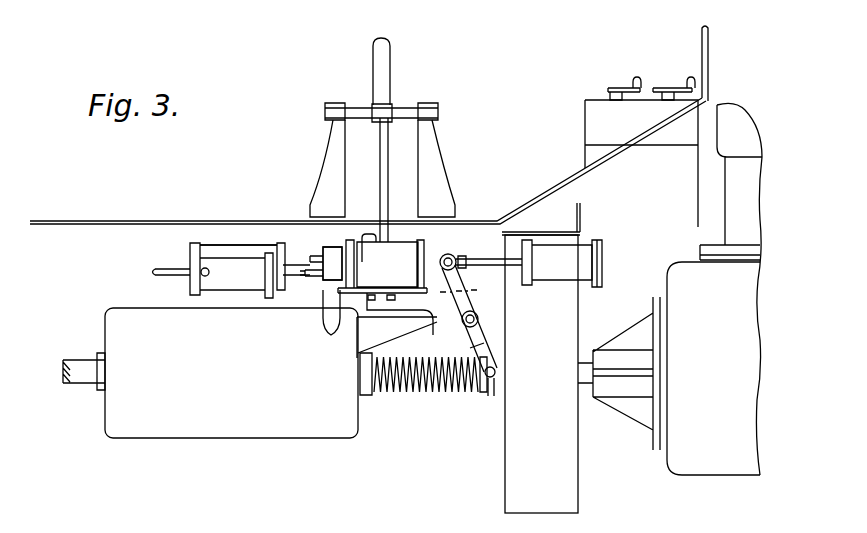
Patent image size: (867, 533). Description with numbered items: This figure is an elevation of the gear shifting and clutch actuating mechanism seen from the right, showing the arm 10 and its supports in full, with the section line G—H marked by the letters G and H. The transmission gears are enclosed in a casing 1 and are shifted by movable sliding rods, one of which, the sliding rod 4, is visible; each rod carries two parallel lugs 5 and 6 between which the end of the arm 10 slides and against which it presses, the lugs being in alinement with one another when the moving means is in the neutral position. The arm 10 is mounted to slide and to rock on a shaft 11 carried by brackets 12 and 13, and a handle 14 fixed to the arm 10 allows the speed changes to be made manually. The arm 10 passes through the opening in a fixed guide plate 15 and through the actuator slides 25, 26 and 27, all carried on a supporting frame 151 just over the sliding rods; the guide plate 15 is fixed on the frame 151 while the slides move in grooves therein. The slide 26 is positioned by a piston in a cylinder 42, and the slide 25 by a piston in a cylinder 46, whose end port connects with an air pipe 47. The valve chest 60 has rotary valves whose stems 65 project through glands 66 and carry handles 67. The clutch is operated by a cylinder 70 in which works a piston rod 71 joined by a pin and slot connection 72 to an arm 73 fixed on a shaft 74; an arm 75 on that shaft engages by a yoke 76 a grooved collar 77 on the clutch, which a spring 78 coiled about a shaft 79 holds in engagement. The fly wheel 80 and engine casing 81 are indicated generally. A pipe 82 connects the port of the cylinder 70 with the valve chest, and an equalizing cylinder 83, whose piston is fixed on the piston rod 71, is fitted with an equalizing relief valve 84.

The casing 1 is at (125, 418).
The sliding rod 4 is at (447, 312).
The lug 5 is at (372, 298).
The lug 6 is at (375, 300).
The arm 10 is at (383, 172).
The shaft 11 is at (404, 111).
The bracket 12 is at (325, 192).
The bracket 13 is at (438, 192).
The handle 14 is at (374, 54).
The fixed guide plate 15 is at (333, 249).
The actuator slide 25 is at (316, 278).
The actuator slide 26 is at (318, 257).
The actuator slide 27 is at (325, 284).
The cylinder 42 is at (230, 245).
The cylinder 46 is at (224, 293).
The air pipe 47 is at (170, 268).
The chest 60 is at (585, 128).
The valve stem 65 is at (606, 90).
The gland 66 is at (666, 99).
The handle 67 is at (690, 82).
The cylinder 70 is at (398, 255).
The piston rod 71 is at (497, 258).
The pin and slot connection 72 is at (452, 254).
The arm 73 is at (468, 291).
The shaft 74 is at (480, 320).
The arm 75 is at (488, 350).
The yoke 76 is at (496, 372).
The grooved collar 77 is at (490, 398).
The spring 78 is at (400, 390).
The shaft 79 is at (416, 392).
The fly wheel 80 is at (560, 458).
The engine casing 81 is at (677, 447).
The pipe 82 is at (358, 236).
The equalizing cylinder 83 is at (565, 248).
The equalizing relief valve 84 is at (597, 243).
The supporting frame 151 is at (330, 282).
The section line G—H G is at (296, 283).
The section line G— H is at (465, 292).